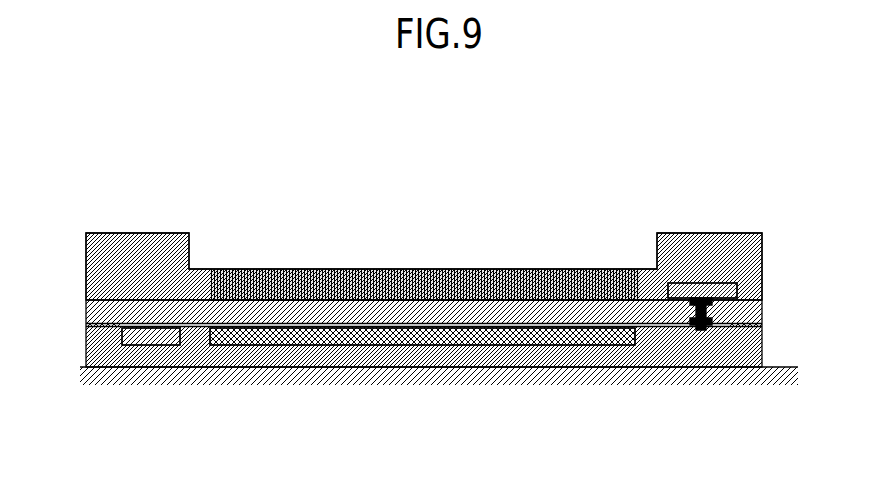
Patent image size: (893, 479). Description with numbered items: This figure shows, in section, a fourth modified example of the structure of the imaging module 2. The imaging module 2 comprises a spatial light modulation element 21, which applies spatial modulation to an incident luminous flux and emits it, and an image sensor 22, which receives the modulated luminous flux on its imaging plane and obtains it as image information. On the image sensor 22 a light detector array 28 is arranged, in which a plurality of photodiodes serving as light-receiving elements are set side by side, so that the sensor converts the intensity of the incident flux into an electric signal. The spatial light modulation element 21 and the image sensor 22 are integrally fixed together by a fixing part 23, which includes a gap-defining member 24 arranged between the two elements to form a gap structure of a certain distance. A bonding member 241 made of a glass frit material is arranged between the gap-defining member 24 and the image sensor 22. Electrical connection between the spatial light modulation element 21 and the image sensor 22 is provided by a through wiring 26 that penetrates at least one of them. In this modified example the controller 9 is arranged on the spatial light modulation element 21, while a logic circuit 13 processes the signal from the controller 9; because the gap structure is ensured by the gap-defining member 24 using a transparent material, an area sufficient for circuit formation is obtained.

The imaging module 2 is at (602, 128).
The controller 9 is at (728, 283).
The logic circuit 13 is at (163, 345).
The spatial light modulation element 21 is at (220, 270).
The image sensor 22 is at (382, 370).
The fixing part 23 is at (772, 301).
The gap-defining member 24 is at (763, 308).
The through wiring 26 is at (763, 345).
The light detector array 28 is at (550, 343).
The bonding member 241 is at (85, 323).